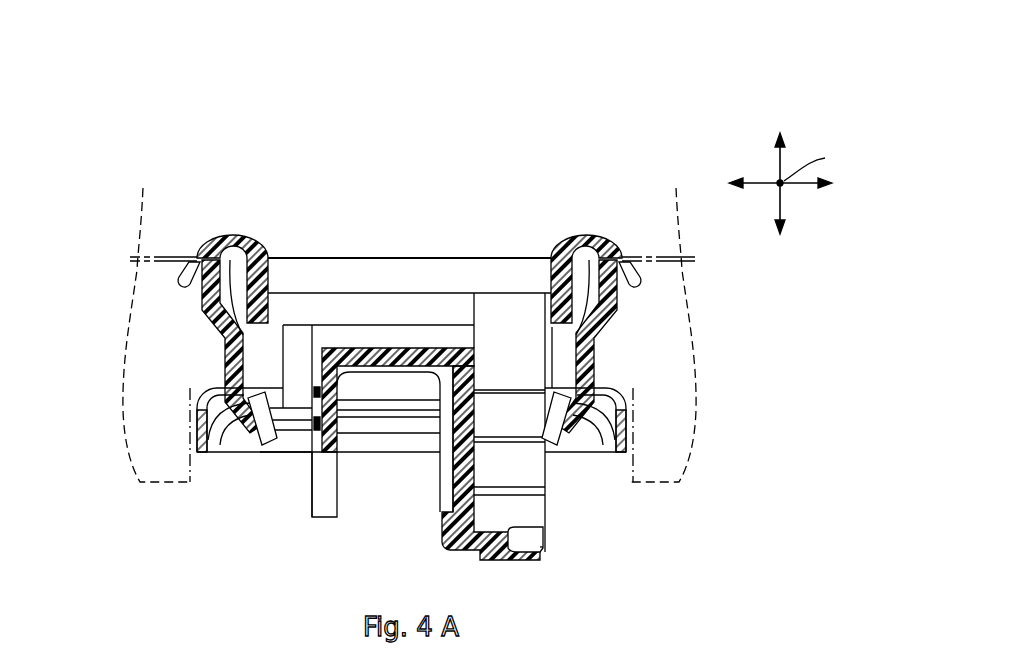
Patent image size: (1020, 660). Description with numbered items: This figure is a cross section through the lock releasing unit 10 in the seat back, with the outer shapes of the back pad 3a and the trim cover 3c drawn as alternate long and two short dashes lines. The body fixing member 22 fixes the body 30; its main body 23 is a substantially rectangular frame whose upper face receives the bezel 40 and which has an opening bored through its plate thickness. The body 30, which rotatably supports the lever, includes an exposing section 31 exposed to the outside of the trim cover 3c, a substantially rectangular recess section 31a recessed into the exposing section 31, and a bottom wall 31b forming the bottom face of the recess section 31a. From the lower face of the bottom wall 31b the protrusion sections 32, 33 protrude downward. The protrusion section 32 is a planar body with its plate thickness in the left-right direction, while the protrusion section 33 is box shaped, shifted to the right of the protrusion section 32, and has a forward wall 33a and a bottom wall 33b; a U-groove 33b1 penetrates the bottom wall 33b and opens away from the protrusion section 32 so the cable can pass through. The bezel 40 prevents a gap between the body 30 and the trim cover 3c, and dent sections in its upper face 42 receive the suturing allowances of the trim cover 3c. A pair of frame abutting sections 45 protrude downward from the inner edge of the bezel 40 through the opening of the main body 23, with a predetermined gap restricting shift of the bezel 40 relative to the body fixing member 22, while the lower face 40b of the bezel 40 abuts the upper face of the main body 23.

The mounting structure 10 is at (403, 137).
The back pad 3a is at (134, 398).
The trim cover 3c is at (409, 324).
The body fixing member 22 is at (410, 460).
The main body 23 is at (578, 390).
The body 30 is at (586, 200).
The exposing section 31 is at (238, 243).
The recess section 31a is at (272, 288).
The bottom wall 31b is at (390, 350).
The protrusion section 32 is at (323, 477).
The protrusion section 33 is at (430, 544).
The forward wall 33a is at (530, 470).
The bottom wall 33b is at (525, 523).
The U-groove 33b1 is at (540, 547).
The bezel 40 is at (590, 456).
The lower face 40b is at (210, 410).
The upper face 42 is at (200, 258).
The frame abutting sections 45 is at (250, 425).